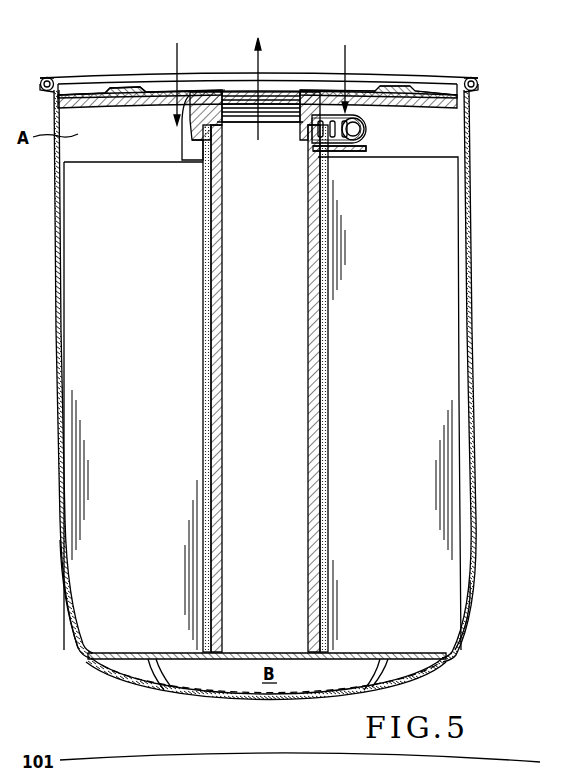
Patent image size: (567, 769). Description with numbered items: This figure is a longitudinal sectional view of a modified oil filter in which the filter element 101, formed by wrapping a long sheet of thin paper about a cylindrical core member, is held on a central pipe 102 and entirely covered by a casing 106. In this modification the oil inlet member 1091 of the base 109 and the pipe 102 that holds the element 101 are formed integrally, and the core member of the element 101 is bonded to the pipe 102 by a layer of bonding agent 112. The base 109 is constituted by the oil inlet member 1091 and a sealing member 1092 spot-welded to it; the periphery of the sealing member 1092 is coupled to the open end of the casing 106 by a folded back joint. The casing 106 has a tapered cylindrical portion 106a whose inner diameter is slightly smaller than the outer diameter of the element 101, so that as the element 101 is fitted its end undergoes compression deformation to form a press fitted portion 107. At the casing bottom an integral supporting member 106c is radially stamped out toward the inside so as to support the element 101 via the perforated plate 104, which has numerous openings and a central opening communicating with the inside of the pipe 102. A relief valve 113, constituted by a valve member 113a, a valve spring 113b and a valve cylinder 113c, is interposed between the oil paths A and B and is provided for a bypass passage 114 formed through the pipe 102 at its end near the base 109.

The filter element 101 is at (458, 303).
The pipe 102 is at (208, 141).
The perforated plate 104 is at (215, 658).
The casing 106 is at (473, 530).
The tapered cylindrical portion 106a is at (466, 612).
The supporting member 106c is at (372, 657).
The press fitted portion 107 is at (72, 628).
The base 109 is at (423, 88).
The oil inlet member 1091 is at (157, 93).
The sealing member 1092 is at (101, 92).
The layer of bonding agent 112 is at (221, 410).
The relief valve 113 is at (345, 152).
The valve member 113a is at (365, 129).
The valve spring 113b is at (341, 151).
The valve cylinder 113c is at (360, 150).
The bypass passage 114 is at (310, 132).